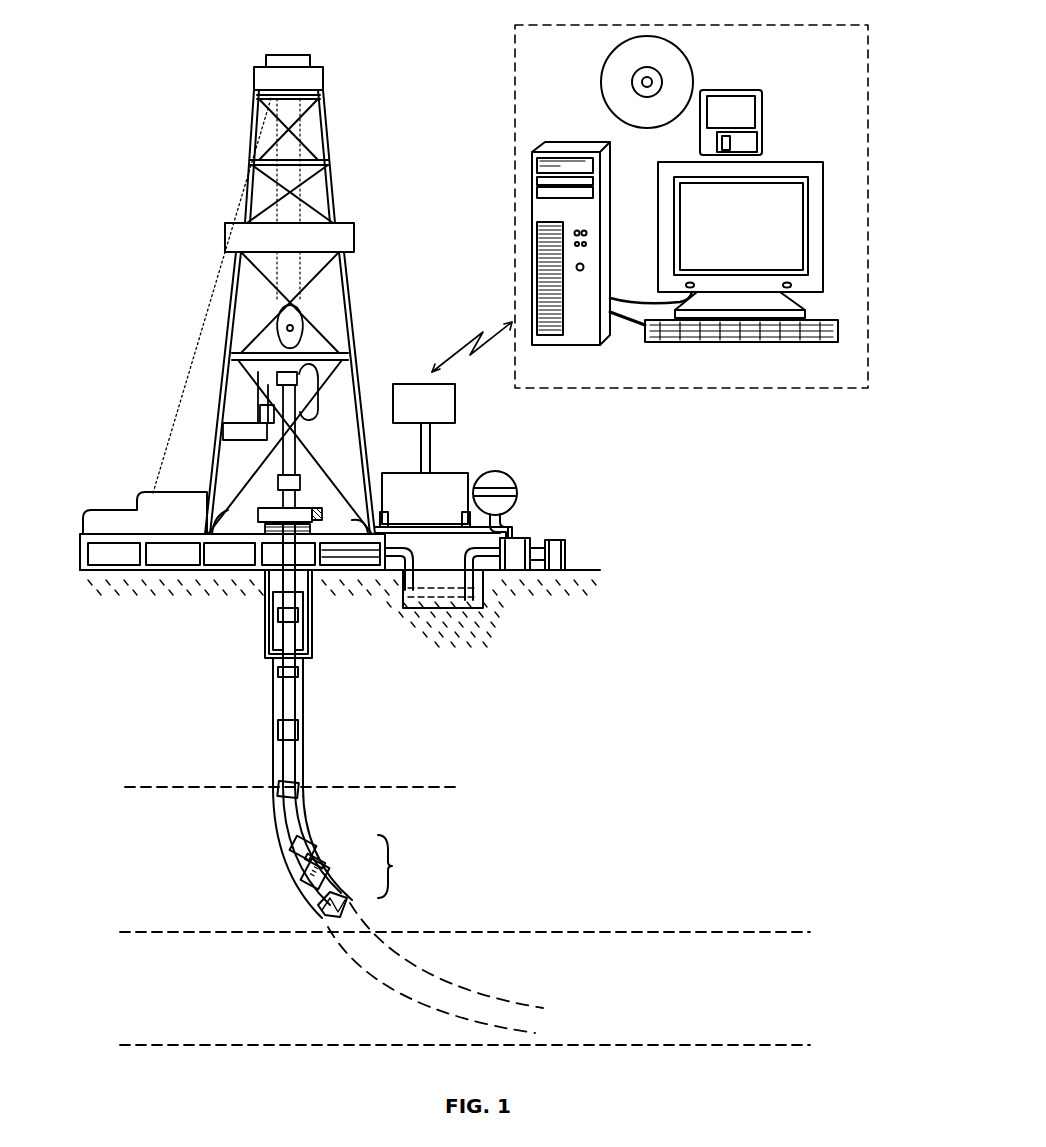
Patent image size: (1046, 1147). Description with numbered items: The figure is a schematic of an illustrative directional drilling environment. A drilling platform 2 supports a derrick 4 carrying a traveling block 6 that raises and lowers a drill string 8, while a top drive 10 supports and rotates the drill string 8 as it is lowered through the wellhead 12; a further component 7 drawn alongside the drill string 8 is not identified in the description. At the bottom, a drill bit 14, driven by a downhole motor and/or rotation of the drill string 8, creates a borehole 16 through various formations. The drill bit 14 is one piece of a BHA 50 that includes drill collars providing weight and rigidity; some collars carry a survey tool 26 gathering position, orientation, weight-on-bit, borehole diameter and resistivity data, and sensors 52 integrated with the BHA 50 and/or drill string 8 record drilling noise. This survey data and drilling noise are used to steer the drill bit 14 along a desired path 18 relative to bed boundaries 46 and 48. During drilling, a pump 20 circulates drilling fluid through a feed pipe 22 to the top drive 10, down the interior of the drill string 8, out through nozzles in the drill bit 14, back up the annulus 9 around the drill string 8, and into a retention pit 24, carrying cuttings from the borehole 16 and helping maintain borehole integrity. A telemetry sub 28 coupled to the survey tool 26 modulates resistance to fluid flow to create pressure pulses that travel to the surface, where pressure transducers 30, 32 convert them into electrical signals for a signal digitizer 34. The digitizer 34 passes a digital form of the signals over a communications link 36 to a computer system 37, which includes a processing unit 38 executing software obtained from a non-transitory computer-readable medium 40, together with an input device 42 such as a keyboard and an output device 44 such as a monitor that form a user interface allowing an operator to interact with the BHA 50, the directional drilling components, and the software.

The drilling platform 2 is at (80, 540).
The derrick 4 is at (328, 192).
The traveling block 6 is at (300, 322).
The drill string 7 is at (283, 670).
The drill string 8 is at (300, 692).
The annulus 9 is at (277, 702).
The top drive 10 is at (288, 400).
The wellhead 12 is at (268, 507).
The drill bit 14 is at (325, 887).
The borehole 16 is at (303, 712).
The desired path 18 is at (463, 1000).
The pump 20 is at (518, 544).
The feed pipe 22 is at (485, 532).
The retention pit 24 is at (425, 593).
The survey tool 26 is at (300, 877).
The telemetry sub 28 is at (293, 850).
The pressure transducer 30 is at (386, 514).
The pressure transducer 32 is at (464, 514).
The signal digitizer 34 is at (457, 403).
The communications link 36 is at (468, 342).
The computer system 37 is at (772, 388).
The processing unit 38 is at (610, 262).
The non-transitory computer-readable medium 40 is at (717, 90).
The input device 42 is at (813, 342).
The output device 44 is at (808, 292).
The bed boundary 46 is at (653, 933).
The bed boundary 48 is at (677, 1045).
The BHA 50 is at (404, 866).
The sensors 52 is at (318, 857).